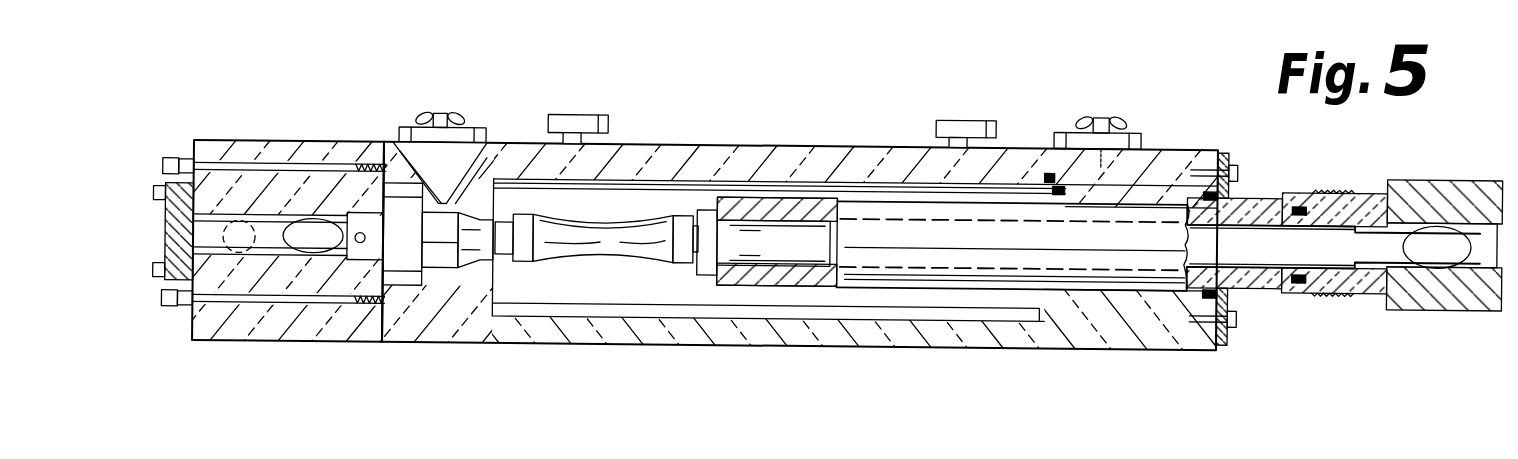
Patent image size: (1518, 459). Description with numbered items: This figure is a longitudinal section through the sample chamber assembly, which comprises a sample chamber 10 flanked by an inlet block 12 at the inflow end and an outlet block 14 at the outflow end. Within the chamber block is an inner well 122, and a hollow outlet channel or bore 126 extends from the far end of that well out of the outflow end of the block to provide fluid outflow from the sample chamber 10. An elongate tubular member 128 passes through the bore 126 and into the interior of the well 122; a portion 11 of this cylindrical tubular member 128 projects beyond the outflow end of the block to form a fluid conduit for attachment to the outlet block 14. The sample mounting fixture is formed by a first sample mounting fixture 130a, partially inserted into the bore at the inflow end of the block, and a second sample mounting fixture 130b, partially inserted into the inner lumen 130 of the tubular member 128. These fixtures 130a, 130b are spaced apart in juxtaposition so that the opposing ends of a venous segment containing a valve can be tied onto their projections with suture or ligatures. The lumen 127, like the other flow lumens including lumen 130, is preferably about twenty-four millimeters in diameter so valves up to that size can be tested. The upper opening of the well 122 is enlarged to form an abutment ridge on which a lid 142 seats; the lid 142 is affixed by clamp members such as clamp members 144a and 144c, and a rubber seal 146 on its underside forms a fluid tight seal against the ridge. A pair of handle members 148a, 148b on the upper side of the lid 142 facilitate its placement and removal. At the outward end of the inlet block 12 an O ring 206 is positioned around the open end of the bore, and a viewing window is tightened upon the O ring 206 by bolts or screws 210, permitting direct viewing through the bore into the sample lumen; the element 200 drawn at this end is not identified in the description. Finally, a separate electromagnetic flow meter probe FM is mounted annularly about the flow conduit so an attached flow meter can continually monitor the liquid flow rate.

The sample chamber 10 is at (1258, 370).
The portion of tubular member 11 is at (1262, 290).
The inlet block 12 is at (377, 370).
The outlet block 14 is at (1505, 331).
The inner well 122 is at (1000, 307).
The outlet bore 126 is at (1237, 190).
The lumen 127 is at (282, 228).
The elongate tubular member 128 is at (1140, 245).
The inner lumen 130 is at (780, 237).
The first sample mounting fixture 130a is at (515, 207).
The second sample mounting fixture 130b is at (712, 210).
The lid 142 is at (887, 157).
The clamp member 144a is at (408, 128).
The clamp member 144c is at (1075, 129).
The rubber seal 146 is at (1050, 176).
The handle member 148a is at (585, 116).
The handle member 148b is at (970, 118).
The end plate 200 is at (163, 240).
The O ring 206 is at (207, 160).
The bolts or screws 210 is at (158, 190).
The electromagnetic flow meter probe FM is at (488, 140).